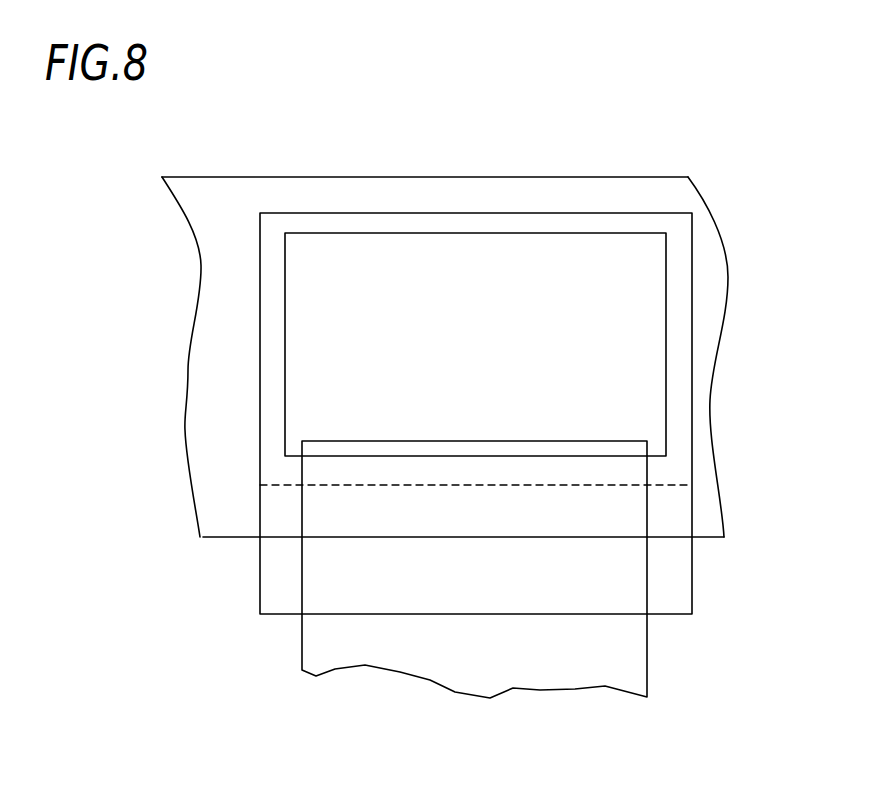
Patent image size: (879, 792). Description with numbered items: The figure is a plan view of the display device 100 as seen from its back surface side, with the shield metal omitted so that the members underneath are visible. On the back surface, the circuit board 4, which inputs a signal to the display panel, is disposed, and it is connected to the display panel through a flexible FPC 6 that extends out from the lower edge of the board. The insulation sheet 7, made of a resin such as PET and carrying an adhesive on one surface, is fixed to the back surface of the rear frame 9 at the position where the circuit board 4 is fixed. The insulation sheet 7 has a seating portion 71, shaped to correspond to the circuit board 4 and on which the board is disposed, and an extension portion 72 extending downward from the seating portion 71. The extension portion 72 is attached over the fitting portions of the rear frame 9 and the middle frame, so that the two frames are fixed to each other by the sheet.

The display device 100 is at (219, 582).
The rear frame 9 is at (208, 440).
The insulation sheet 7 is at (680, 250).
The seating portion 71 is at (726, 212).
The extension portion 72 is at (725, 486).
The circuit board 4 is at (463, 273).
The FPC 6 is at (633, 633).